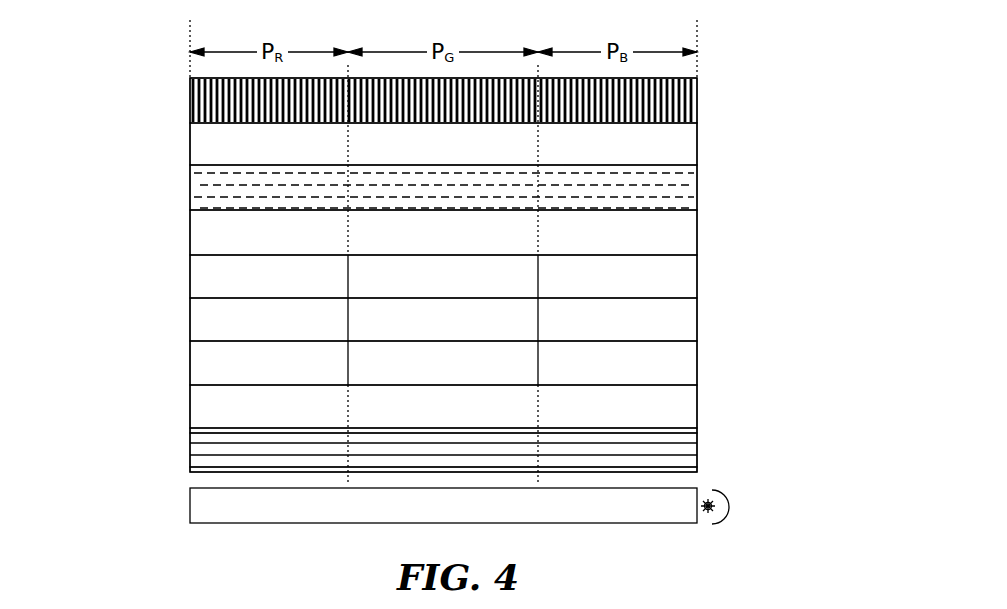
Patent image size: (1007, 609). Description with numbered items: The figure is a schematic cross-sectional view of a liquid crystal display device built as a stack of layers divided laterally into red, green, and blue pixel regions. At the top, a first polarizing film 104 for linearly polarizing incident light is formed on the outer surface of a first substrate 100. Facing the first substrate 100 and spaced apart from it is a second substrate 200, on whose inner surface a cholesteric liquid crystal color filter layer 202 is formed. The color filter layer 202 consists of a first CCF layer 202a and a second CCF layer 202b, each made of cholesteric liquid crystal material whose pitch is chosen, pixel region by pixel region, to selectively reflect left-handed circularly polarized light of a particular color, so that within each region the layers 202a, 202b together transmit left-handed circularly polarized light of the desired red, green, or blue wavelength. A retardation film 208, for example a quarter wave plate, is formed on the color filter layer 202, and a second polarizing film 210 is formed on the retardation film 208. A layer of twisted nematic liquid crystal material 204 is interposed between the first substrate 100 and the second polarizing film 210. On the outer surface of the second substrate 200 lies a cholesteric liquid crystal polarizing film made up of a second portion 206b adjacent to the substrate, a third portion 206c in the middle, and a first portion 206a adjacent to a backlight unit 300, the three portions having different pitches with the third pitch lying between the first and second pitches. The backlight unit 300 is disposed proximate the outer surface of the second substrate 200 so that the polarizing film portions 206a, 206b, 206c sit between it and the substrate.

The first polarizing film 104 is at (697, 98).
The first substrate 100 is at (697, 148).
The layer of liquid crystal material 204 is at (697, 188).
The second polarizing film 210 is at (697, 232).
The retardation film 208 is at (697, 275).
The first CCF layer 202a is at (697, 323).
The second CCF layer 202b is at (697, 361).
The cholesteric liquid crystal color filter layer 202 is at (533, 341).
The second substrate 200 is at (697, 408).
The second portion of CLC polarizing film 206b is at (232, 427).
The third portion of CLC polarizing film 206c is at (186, 437).
The first portion of CLC polarizing film 206a is at (222, 471).
The backlight unit 300 is at (746, 505).